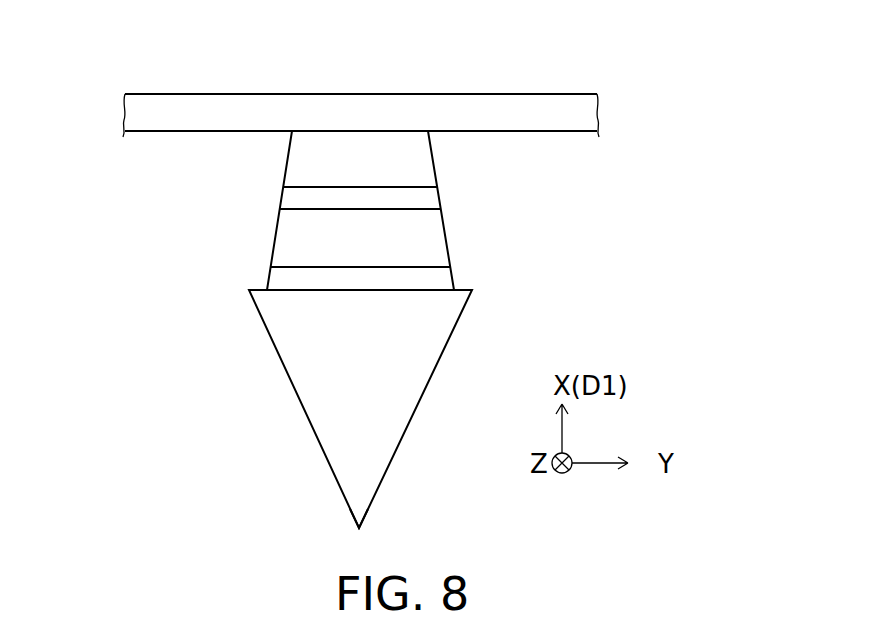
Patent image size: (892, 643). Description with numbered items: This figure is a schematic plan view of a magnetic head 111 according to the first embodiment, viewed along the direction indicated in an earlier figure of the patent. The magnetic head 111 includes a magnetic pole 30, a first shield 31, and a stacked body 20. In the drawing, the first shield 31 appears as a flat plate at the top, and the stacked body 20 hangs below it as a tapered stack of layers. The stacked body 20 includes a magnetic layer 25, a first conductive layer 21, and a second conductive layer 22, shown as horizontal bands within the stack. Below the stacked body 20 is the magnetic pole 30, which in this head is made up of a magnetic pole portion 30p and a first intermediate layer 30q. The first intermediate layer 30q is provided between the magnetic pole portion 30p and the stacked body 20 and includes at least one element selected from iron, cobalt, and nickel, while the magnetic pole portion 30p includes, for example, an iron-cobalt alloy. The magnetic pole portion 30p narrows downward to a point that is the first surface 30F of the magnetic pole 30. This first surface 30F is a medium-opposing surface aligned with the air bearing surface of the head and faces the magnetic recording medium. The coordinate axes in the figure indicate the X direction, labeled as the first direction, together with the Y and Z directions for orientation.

The magnetic head 111 is at (690, 78).
The first shield 31 is at (585, 113).
The stacked body 20 is at (505, 142).
The second conductive layer 22 is at (423, 162).
The magnetic layer 25 is at (423, 198).
The first conductive layer 21 is at (423, 235).
The magnetic pole 30 is at (562, 272).
The first intermediate layer 30q is at (432, 277).
The magnetic pole portion 30p is at (375, 387).
The first surface 30F is at (362, 497).